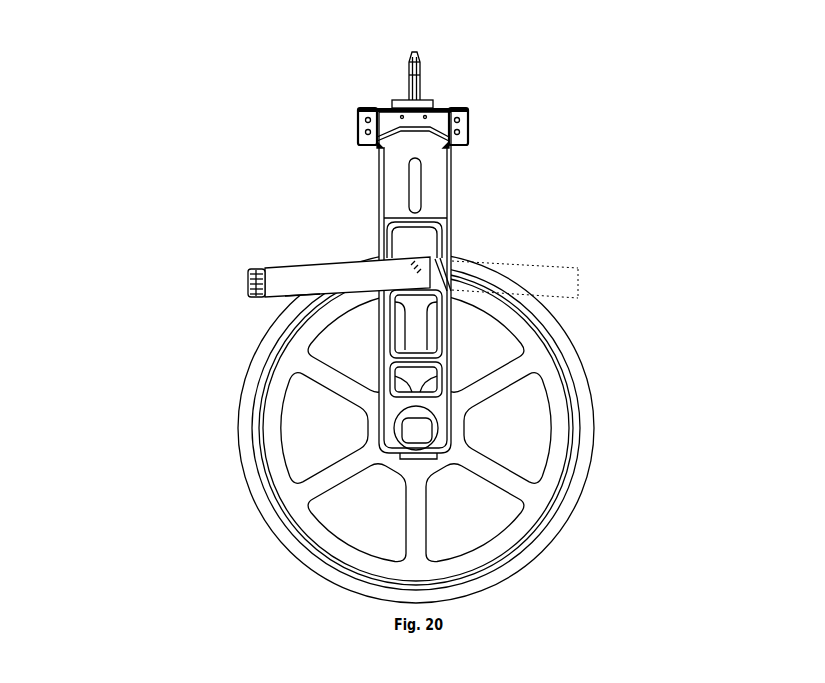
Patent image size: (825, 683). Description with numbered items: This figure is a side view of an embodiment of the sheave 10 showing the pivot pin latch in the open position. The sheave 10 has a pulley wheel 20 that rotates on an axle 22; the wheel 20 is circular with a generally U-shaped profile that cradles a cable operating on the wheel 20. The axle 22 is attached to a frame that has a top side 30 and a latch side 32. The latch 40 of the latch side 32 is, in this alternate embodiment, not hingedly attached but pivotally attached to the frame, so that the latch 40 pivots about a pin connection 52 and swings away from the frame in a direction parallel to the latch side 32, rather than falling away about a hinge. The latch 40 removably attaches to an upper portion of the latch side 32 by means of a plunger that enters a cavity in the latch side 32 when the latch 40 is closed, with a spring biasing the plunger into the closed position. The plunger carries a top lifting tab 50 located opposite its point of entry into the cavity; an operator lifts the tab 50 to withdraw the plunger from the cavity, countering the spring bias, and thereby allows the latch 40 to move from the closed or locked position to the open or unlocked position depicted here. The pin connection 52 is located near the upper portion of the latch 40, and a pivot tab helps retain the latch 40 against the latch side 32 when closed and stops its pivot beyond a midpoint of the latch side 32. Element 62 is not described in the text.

The sheave 10 is at (158, 105).
The pulley wheel 20 is at (575, 510).
The axle 22 is at (422, 432).
The top side 30 is at (463, 122).
The latch side 32 is at (443, 362).
The latch 40 is at (303, 288).
The lifting tab 50 is at (249, 284).
The pin connection 52 is at (413, 270).
The pin 62 is at (418, 51).